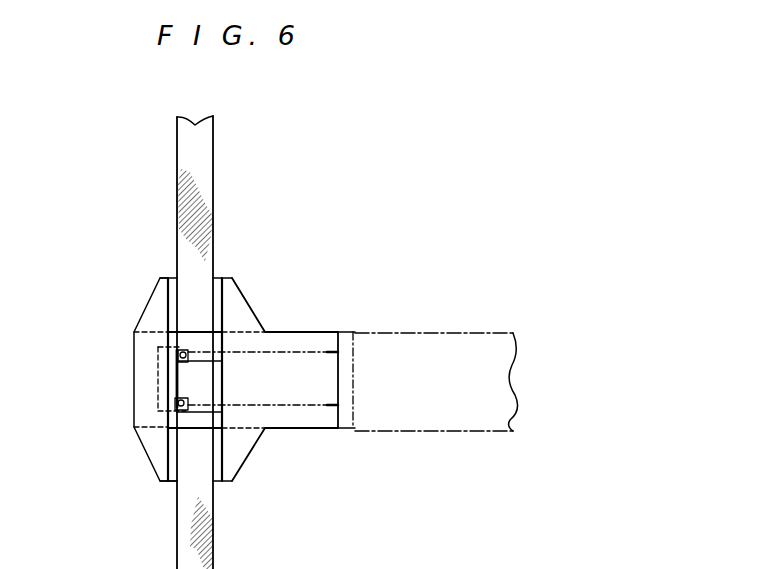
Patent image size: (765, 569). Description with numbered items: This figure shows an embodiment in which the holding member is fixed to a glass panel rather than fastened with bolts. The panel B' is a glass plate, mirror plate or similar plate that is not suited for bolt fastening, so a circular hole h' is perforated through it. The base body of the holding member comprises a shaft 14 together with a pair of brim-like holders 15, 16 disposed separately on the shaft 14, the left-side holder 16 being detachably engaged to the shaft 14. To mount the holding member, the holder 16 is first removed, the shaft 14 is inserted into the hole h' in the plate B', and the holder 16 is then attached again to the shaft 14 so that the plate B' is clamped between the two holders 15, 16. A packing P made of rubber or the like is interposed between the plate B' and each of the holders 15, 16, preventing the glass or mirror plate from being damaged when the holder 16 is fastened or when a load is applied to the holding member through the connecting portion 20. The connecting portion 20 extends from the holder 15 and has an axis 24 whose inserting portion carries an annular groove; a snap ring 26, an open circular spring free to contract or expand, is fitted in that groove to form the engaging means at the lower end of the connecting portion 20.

The panel B' is at (155, 342).
The packing P is at (165, 278).
The holder 16 is at (149, 300).
The shaft 14 is at (197, 342).
The holder 15 is at (259, 321).
The connecting portion 20 is at (416, 333).
The snap ring 26 is at (144, 418).
The axis 24 is at (280, 410).
The circular hole h' is at (153, 501).